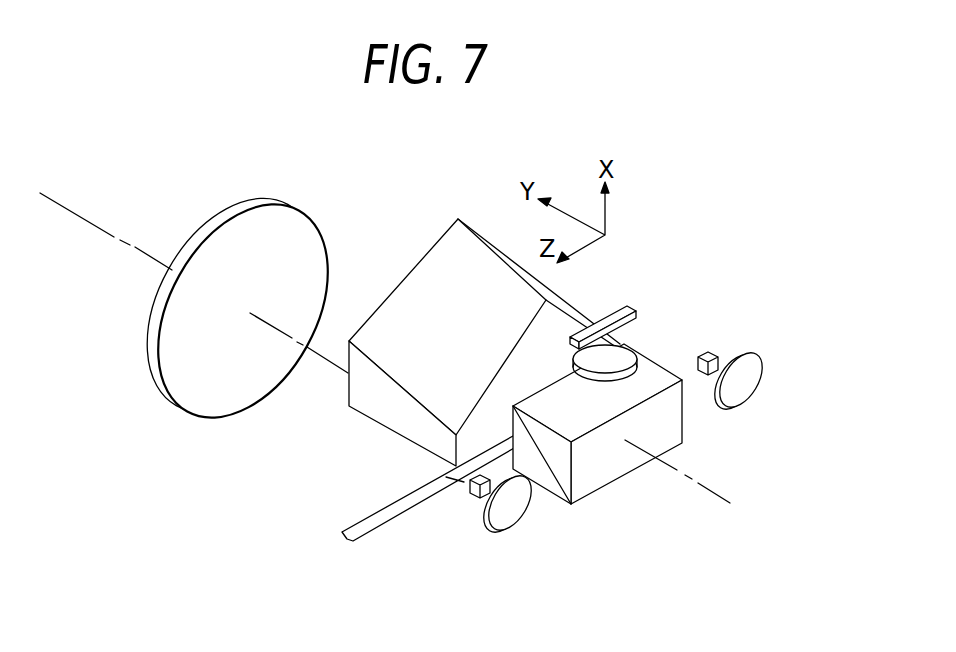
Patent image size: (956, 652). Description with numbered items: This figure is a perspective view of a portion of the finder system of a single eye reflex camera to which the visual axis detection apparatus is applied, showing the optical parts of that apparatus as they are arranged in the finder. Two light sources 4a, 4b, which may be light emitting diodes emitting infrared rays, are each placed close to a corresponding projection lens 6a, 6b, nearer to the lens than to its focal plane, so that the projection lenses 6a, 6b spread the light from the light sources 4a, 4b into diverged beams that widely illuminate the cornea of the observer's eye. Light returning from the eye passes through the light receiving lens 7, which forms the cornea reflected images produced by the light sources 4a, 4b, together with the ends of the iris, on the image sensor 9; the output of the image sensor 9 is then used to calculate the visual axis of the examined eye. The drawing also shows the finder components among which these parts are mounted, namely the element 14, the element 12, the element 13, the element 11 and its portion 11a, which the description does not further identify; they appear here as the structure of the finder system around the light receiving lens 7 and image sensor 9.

The objective lens 14 is at (275, 218).
The prism 12 is at (447, 244).
The base plate 13 is at (383, 520).
The light source unit housing 11 is at (631, 451).
The front corner of housing 11a is at (562, 502).
The light receiving lens 7 is at (623, 362).
The image sensor 9 is at (633, 312).
The light source 4a is at (705, 353).
The light source 4b is at (478, 497).
The projection lens 6a is at (752, 367).
The projection lens 6b is at (510, 517).